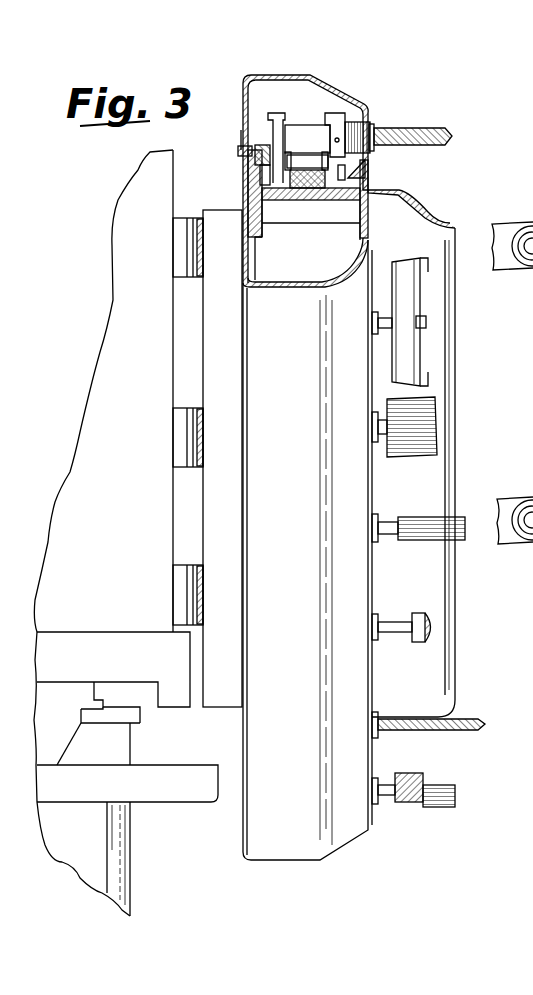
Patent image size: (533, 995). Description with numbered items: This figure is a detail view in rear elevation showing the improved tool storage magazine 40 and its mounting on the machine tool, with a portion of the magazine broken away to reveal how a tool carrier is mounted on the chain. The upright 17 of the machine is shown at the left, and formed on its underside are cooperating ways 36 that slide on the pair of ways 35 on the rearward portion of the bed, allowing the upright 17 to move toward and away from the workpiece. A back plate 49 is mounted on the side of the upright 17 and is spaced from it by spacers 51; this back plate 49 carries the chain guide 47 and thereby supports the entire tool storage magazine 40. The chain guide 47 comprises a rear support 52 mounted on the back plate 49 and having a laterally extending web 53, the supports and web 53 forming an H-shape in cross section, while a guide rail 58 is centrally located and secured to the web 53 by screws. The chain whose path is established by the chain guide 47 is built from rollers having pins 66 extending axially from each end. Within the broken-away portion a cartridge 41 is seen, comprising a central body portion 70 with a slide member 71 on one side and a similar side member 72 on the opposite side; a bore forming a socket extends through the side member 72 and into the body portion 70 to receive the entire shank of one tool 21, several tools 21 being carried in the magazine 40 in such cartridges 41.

The upright 17 is at (128, 254).
The tool 21 is at (390, 124).
The ways 35 is at (128, 716).
The cooperating ways 36 is at (120, 682).
The tool storage magazine 40 is at (463, 657).
The tool carrier or cartridge 41 is at (349, 166).
The chain guide 47 is at (330, 200).
The back plate 49 is at (242, 133).
The spacers 51 is at (181, 260).
The rear support 52 is at (255, 138).
The web 53 is at (355, 190).
The guide rail 58 is at (300, 192).
The pins 66 is at (532, 203).
The central body portion 70 is at (298, 125).
The slide member 71 is at (270, 143).
The side member 72 is at (340, 112).